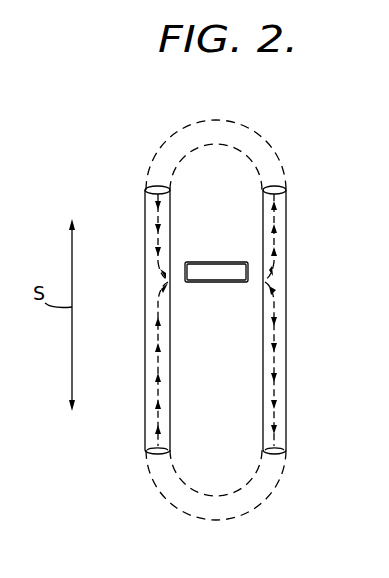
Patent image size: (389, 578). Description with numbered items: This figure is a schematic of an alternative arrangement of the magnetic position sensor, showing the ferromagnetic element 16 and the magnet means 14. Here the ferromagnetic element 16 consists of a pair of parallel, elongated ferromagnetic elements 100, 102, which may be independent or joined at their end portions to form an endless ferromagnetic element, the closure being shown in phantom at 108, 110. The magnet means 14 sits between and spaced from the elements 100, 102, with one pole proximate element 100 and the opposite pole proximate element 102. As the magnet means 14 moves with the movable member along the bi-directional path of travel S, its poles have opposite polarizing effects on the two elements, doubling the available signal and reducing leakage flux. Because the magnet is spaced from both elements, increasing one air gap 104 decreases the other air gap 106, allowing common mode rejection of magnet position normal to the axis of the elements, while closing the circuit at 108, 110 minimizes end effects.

The magnet means 14 is at (212, 262).
The ferromagnetic element 16 is at (289, 313).
The elongated ferromagnetic element 100 is at (145, 231).
The elongated ferromagnetic element 102 is at (287, 222).
The air gap 104 is at (178, 272).
The air gap 106 is at (249, 272).
The phantom closure of magnetic circuit 108 is at (225, 128).
The phantom closure of magnetic circuit 110 is at (220, 508).